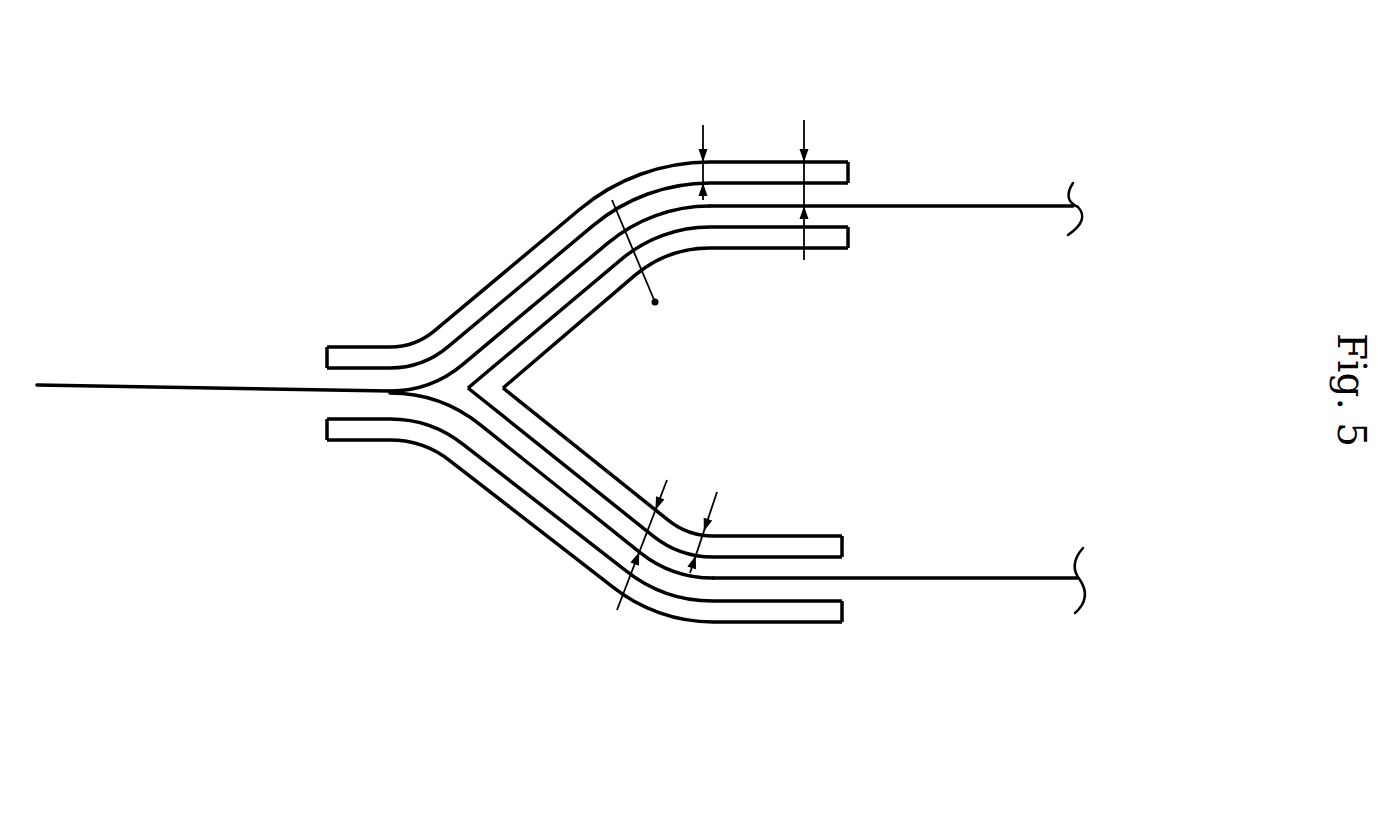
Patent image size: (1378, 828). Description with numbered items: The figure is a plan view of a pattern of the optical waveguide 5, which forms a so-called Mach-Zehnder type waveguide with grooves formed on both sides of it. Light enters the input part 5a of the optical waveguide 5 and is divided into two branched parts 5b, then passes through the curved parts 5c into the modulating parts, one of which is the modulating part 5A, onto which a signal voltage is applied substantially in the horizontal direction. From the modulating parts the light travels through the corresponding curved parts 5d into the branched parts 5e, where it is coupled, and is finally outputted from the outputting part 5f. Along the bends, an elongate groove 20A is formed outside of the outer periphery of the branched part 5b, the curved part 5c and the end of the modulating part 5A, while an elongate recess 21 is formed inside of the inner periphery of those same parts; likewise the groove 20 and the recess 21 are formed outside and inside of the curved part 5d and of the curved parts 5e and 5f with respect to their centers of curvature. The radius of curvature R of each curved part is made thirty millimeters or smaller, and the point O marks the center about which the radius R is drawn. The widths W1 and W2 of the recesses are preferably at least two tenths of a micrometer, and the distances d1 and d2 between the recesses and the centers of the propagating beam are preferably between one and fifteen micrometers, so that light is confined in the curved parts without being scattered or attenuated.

The optical waveguide 5 is at (561, 365).
The input part 5a is at (233, 392).
The branched part 5b is at (527, 313).
The curved part 5c is at (612, 200).
The curved part 5d is at (583, 556).
The branched part 5e is at (497, 343).
The outputting part 5f is at (480, 423).
The modulating part 5A is at (957, 205).
The groove 20 is at (735, 615).
The elongate groove 20A is at (767, 163).
The elongate recess 21 is at (782, 245).
The width W1 is at (708, 170).
The width W2 is at (713, 540).
The distance d1 is at (805, 192).
The distance d2 is at (637, 535).
The radius of curvature R is at (643, 260).
The bend center O is at (670, 320).